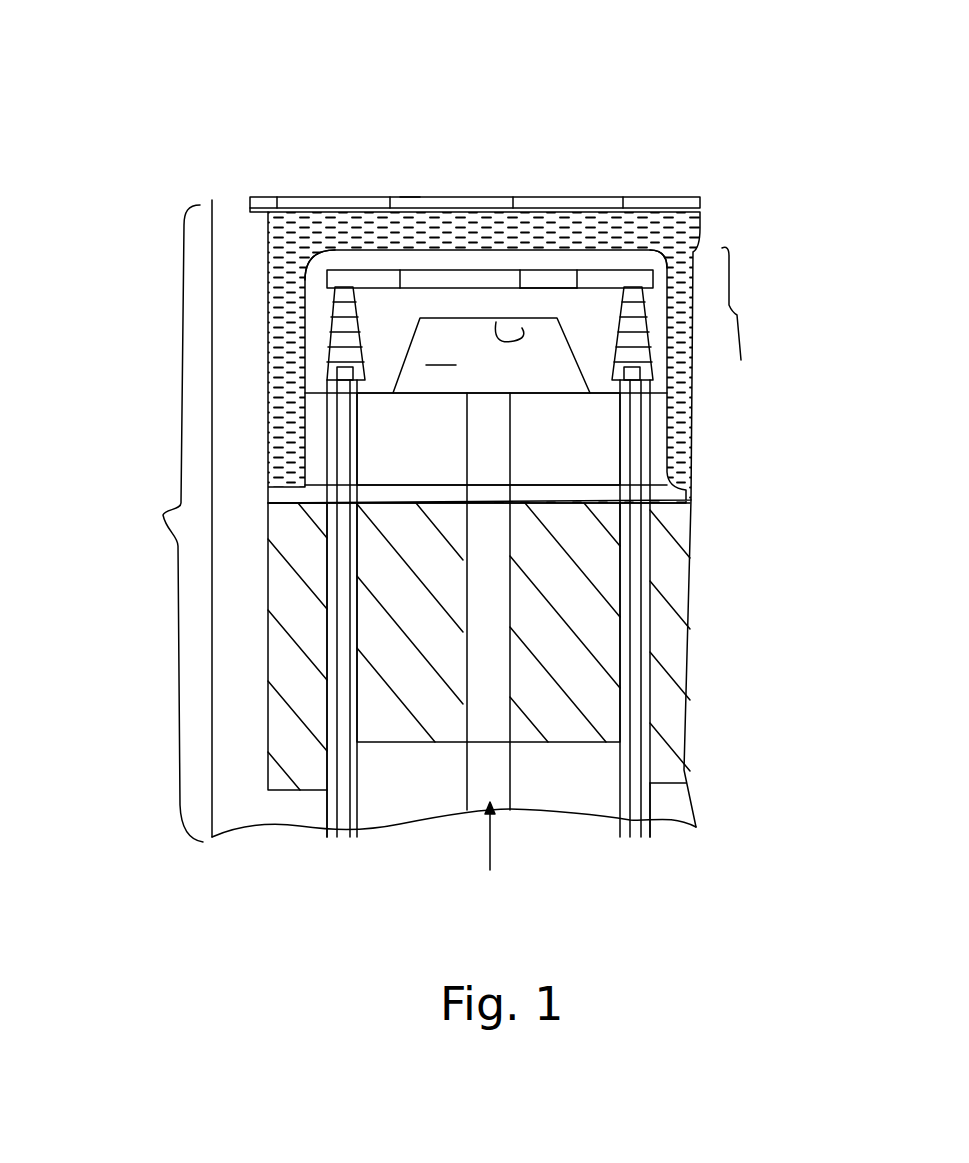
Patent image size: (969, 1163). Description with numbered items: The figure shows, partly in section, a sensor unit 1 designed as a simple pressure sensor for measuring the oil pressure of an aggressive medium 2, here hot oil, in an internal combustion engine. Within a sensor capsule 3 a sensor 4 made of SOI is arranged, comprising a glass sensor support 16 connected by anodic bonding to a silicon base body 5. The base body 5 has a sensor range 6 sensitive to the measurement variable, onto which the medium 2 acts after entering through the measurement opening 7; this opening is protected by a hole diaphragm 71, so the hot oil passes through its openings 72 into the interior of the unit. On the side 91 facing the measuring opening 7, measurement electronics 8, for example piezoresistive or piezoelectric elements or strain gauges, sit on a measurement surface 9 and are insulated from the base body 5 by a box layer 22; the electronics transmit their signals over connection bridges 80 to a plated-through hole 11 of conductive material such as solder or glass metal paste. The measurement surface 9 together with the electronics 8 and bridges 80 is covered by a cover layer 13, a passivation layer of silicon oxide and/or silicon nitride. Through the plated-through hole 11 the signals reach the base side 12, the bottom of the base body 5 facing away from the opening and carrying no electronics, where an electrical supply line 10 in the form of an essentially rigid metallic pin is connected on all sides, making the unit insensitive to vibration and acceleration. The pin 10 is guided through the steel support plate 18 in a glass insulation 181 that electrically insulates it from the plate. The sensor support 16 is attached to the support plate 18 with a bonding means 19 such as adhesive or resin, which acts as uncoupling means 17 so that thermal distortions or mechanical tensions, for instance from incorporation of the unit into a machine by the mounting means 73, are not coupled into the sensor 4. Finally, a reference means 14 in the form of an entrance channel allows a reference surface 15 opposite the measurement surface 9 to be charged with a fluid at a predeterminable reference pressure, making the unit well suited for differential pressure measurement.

The sensor unit 1 is at (176, 877).
The aggressive medium 2 is at (285, 308).
The sensor capsule 3 is at (168, 523).
The sensor 4 is at (744, 303).
The base body 5 is at (600, 310).
The sensor range 6 is at (553, 280).
The measurement opening 7 is at (372, 199).
The hole diaphragm 71 is at (475, 204).
The openings 72 is at (400, 197).
The connection bridges 80 is at (407, 197).
The measurement electronics 8 is at (522, 328).
The measurement surface 9 is at (492, 296).
The side facing the measuring opening 91 is at (490, 279).
The electrical supply line 10 is at (632, 557).
The plated-through hole 11 is at (585, 327).
The base side 12 is at (390, 401).
The cover layer 13 is at (340, 259).
The reference means 14 is at (485, 766).
The reference surface 15 is at (641, 383).
The sensor support 16 is at (372, 472).
The uncoupling means 17 is at (300, 473).
The bonding means 19 is at (444, 646).
The support plate 18 is at (673, 768).
The glass insulation 181 is at (647, 603).
The box layer 22 is at (318, 286).
The mounting means 73 is at (228, 769).